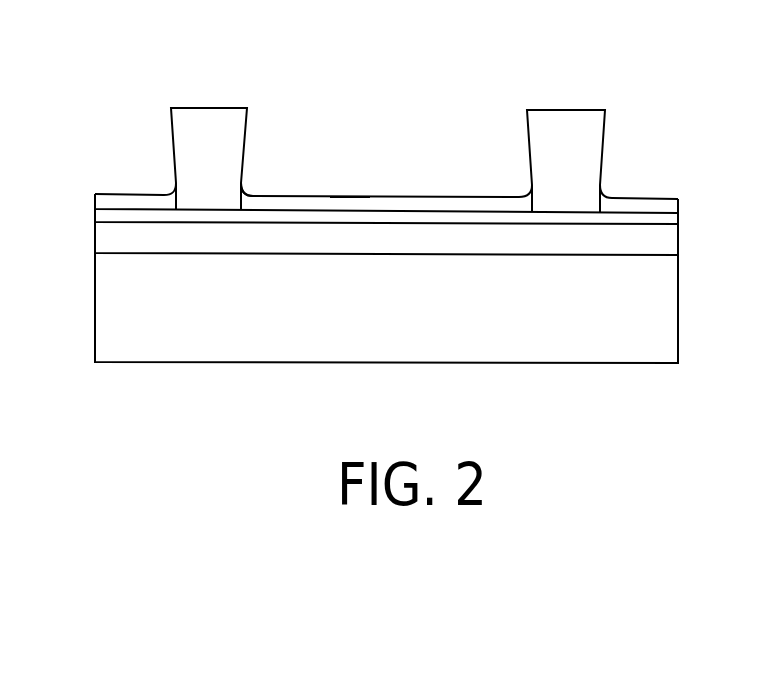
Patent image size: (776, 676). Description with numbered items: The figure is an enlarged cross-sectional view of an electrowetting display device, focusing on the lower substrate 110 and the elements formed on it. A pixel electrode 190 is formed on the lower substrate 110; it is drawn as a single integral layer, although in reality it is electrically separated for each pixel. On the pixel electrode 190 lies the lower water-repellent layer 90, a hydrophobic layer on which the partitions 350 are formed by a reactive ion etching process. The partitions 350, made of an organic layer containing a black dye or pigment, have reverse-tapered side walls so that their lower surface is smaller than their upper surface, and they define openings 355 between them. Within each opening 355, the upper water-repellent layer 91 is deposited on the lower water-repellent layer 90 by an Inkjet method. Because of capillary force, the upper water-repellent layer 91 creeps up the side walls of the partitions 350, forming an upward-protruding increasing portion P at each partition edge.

The lower substrate 110 is at (421, 308).
The pixel electrode 190 is at (421, 254).
The lower water-repellent layer 90 is at (418, 222).
The upper water-repellent layer 91 is at (414, 187).
The partitions 350 is at (388, 133).
The openings 355 is at (367, 145).
The increasing portion P is at (274, 140).